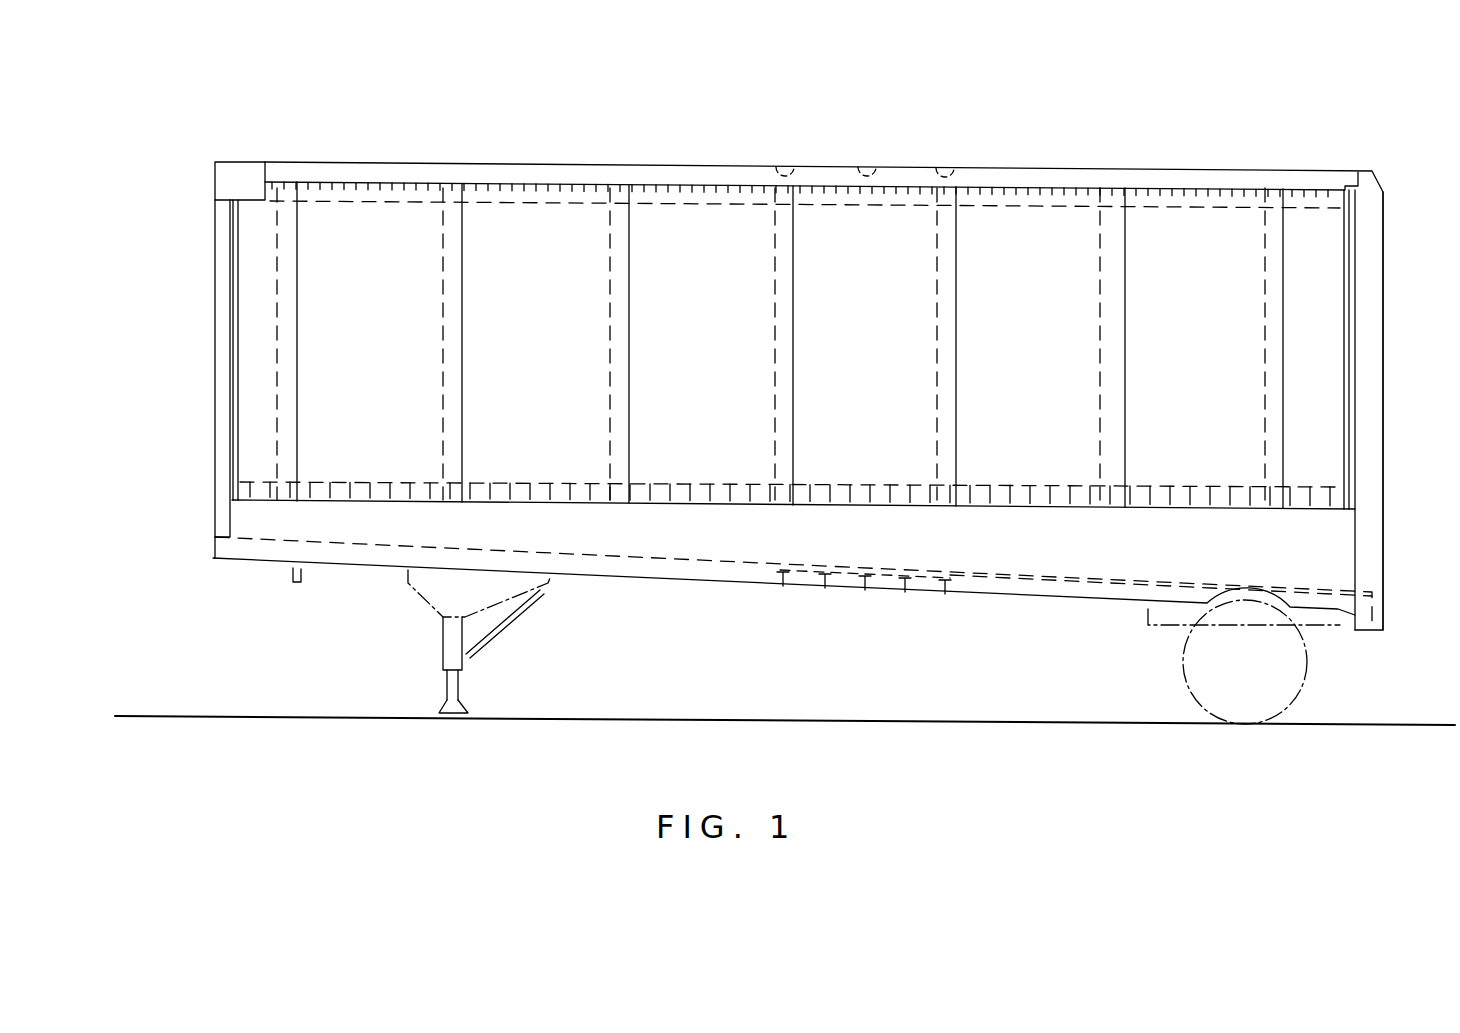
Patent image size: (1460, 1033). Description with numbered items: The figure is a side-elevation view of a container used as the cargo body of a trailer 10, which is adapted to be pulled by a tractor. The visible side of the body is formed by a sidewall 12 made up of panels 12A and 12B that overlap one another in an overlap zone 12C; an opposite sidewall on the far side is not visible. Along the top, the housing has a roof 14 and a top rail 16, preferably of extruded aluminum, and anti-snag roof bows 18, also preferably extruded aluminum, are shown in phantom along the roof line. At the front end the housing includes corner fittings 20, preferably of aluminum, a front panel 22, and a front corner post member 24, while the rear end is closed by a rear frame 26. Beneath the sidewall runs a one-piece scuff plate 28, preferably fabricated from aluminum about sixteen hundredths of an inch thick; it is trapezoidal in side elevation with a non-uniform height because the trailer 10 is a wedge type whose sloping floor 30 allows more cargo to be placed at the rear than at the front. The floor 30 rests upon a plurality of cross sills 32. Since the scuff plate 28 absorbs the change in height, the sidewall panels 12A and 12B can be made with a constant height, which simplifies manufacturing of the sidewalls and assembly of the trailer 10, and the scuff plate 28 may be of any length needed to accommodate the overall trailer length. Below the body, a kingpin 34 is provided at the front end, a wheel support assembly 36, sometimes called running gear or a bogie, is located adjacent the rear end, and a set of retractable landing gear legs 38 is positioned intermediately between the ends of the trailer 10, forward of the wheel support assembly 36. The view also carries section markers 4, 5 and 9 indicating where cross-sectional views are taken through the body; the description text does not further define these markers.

The trailer 10 is at (1266, 104).
The sidewall 12 is at (517, 146).
The panel 12A is at (318, 215).
The panel 12B is at (557, 268).
The zone 12C is at (452, 327).
The roof 14 is at (411, 162).
The top rail 16 is at (353, 178).
The anti-snag roof bows 18 is at (940, 166).
The corner fittings 20 is at (215, 184).
The front panel 22 is at (213, 322).
The front corner post member 24 is at (213, 518).
The rear frame 26 is at (1383, 414).
The scuff plate 28 is at (1345, 540).
The floor 30 is at (982, 571).
The cross sills 32 is at (924, 594).
The kingpin 34 is at (296, 577).
The wheel support assembly 36 is at (1145, 622).
The retractable landing gear legs 38 is at (443, 660).
The section line 4- 4 is at (717, 160).
The section line 5- 5 is at (812, 357).
The section line 9- 9 is at (1040, 160).